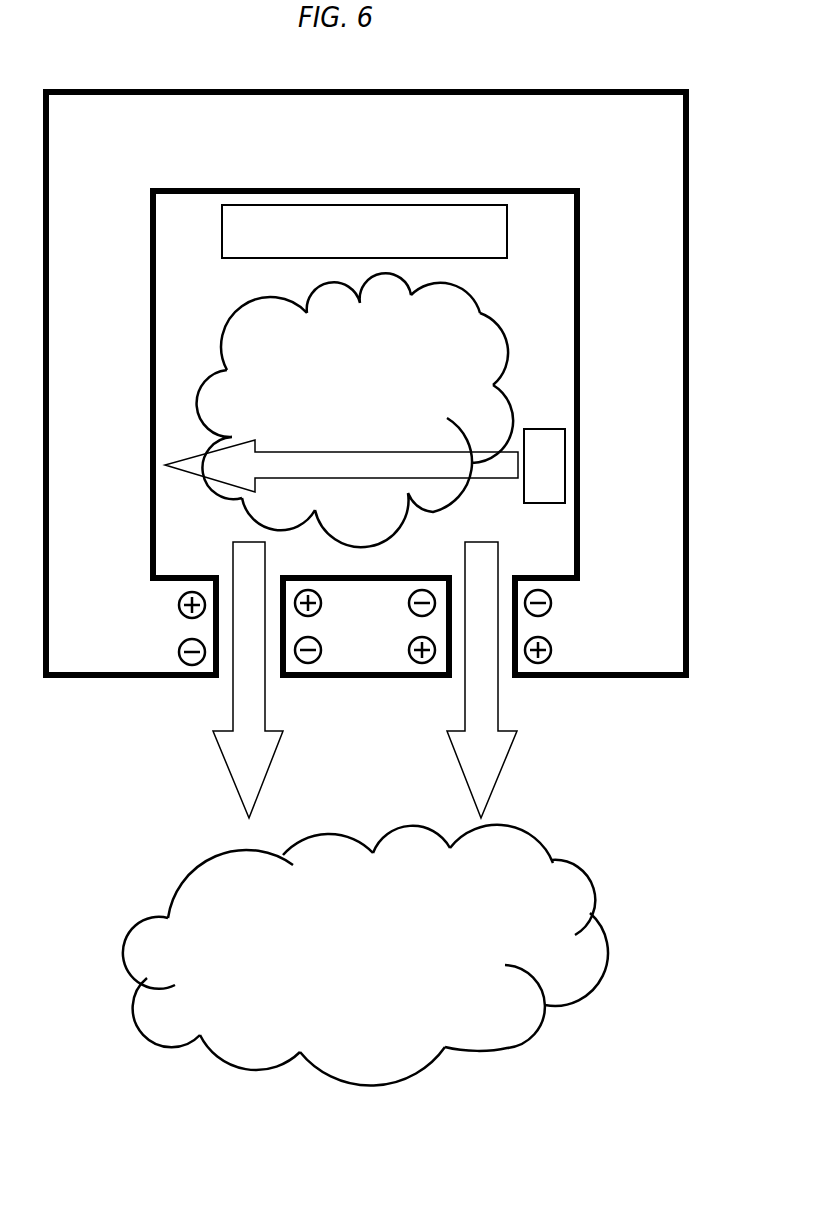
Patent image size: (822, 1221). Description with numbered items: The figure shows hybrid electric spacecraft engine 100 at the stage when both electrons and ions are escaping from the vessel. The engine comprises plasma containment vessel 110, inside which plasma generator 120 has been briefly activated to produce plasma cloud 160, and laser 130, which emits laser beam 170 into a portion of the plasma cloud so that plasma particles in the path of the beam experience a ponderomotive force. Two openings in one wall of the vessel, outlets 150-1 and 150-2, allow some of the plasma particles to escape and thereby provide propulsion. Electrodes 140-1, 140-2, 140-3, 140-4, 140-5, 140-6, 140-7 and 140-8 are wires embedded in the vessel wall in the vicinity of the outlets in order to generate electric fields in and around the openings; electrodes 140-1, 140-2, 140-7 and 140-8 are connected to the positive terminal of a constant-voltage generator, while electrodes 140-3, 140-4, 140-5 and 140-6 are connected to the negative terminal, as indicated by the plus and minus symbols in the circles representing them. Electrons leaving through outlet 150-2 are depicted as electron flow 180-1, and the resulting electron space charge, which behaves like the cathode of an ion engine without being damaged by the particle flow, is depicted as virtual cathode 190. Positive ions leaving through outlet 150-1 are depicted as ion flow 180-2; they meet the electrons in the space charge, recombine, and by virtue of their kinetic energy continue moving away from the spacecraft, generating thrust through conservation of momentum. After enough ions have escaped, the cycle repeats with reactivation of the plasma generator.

The hybrid electric spacecraft engine 100 is at (648, 63).
The plasma containment vessel 110 is at (668, 667).
The plasma generator 120 is at (230, 227).
The laser 130 is at (557, 433).
The electrode 140-1 is at (180, 604).
The electrode 140-2 is at (317, 610).
The electrode 140-3 is at (410, 603).
The electrode 140-4 is at (552, 598).
The electrode 140-5 is at (180, 652).
The electrode 140-6 is at (316, 660).
The electrode 140-7 is at (413, 660).
The electrode 140-8 is at (552, 646).
The outlet 150-1 is at (225, 673).
The outlet 150-2 is at (508, 673).
The plasma cloud 160 is at (492, 330).
The laser beam 170 is at (498, 473).
The electron flow 180-1 is at (493, 770).
The ion flow 180-2 is at (262, 770).
The virtual cathode 190 is at (587, 982).